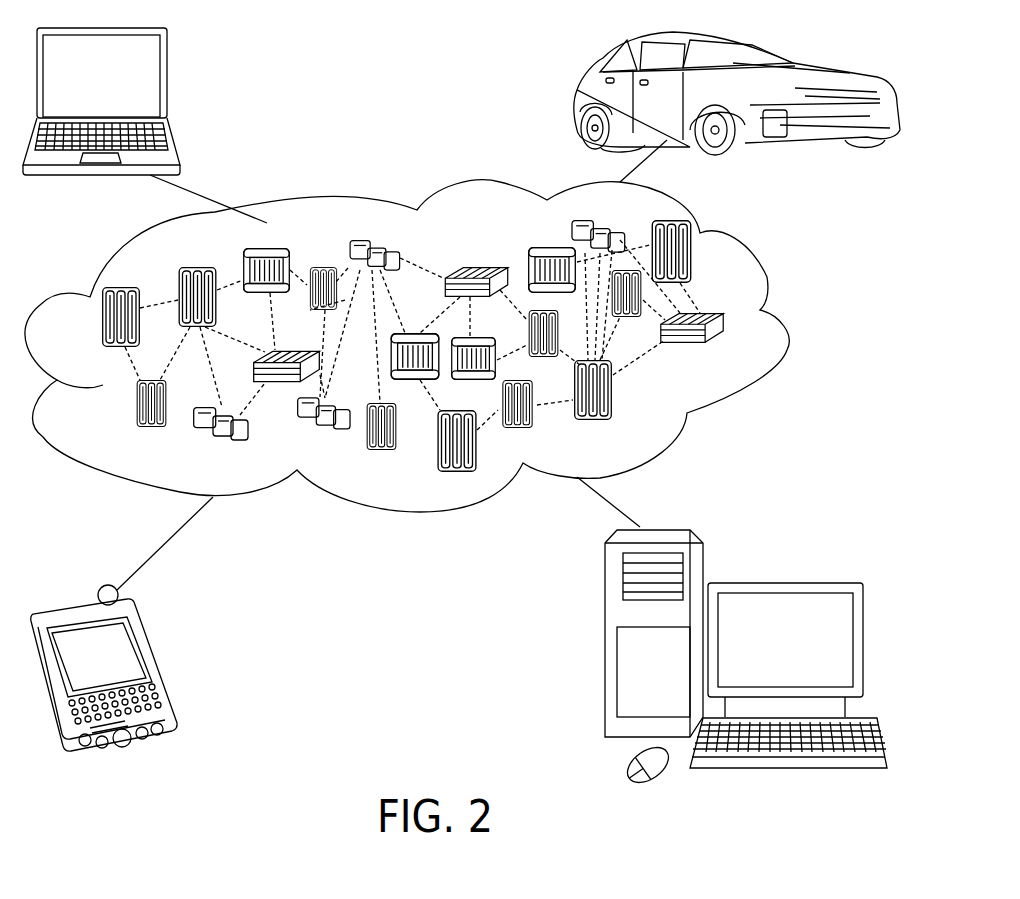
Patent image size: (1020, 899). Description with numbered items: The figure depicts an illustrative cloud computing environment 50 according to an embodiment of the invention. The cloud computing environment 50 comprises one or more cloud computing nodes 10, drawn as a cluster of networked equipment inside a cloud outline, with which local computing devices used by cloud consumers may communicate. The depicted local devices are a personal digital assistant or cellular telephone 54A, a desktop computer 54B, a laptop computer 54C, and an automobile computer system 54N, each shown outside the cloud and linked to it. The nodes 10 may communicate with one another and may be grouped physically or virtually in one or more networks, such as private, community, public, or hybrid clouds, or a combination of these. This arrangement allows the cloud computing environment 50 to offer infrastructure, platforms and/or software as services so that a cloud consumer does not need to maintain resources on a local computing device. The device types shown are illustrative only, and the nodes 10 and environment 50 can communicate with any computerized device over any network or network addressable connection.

The cloud computing environment 50 is at (432, 346).
The cloud computing nodes 10 is at (756, 362).
The personal digital assistant or cellular telephone 54A is at (158, 666).
The desktop computer 54B is at (782, 583).
The laptop computer 54C is at (167, 82).
The automobile computer system 54N is at (578, 98).